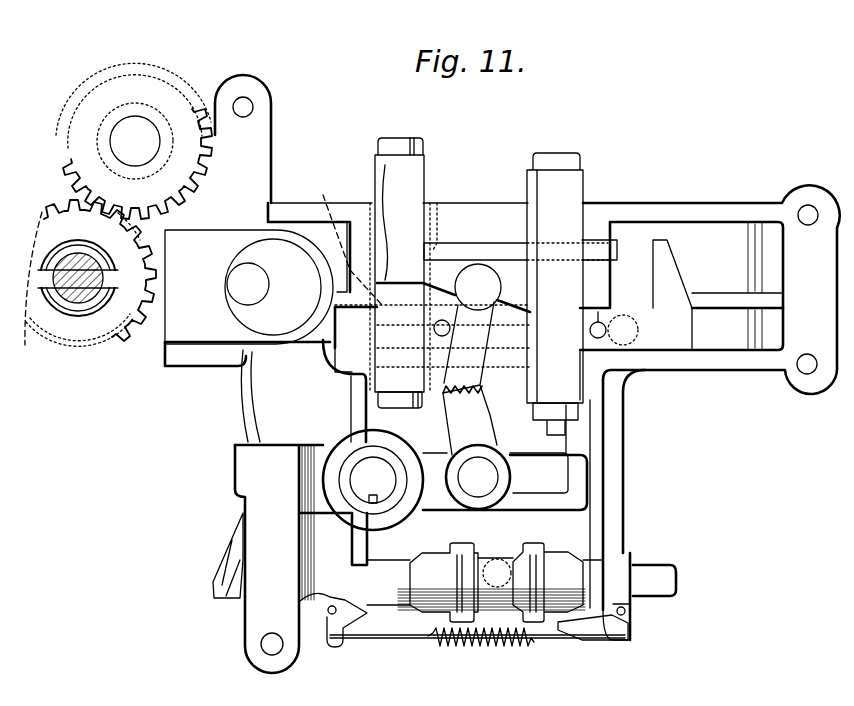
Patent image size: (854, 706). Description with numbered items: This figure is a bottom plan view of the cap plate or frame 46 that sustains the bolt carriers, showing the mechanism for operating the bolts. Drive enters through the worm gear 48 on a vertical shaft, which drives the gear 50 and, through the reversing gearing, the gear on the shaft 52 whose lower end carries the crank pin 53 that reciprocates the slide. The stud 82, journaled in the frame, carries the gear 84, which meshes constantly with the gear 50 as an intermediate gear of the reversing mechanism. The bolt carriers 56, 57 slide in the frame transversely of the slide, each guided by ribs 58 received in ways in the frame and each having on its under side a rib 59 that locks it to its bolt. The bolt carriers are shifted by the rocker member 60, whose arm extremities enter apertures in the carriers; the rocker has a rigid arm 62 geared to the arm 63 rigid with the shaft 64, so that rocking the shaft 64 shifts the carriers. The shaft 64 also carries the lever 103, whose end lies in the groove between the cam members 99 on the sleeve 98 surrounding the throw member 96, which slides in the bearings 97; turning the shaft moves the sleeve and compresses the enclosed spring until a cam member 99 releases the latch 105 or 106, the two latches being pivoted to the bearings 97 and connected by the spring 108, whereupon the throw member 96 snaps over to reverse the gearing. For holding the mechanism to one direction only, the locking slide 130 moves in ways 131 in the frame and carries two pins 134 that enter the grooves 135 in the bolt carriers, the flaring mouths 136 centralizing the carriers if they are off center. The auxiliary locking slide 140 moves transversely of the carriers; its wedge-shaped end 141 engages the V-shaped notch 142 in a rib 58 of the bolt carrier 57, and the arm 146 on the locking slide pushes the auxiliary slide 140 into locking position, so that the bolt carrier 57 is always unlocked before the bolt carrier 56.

The cap plate or frame 46 is at (760, 362).
The worm gear 48 is at (77, 300).
The gear 50 is at (133, 287).
The shaft 52 is at (277, 307).
The crank pin 53 is at (247, 297).
The bolt carrier 56 is at (583, 200).
The bolt carrier 57 is at (392, 168).
The ribs 58 is at (380, 140).
The rib 59 is at (385, 235).
The rocker member 60 is at (500, 265).
The arm 62 is at (472, 337).
The arm 63 is at (462, 418).
The shaft 64 is at (475, 485).
The stud 82 is at (130, 125).
The gear 84 is at (70, 167).
The throw member 96 is at (400, 603).
The bearings 97 is at (640, 590).
The sleeve 98 is at (503, 607).
The cam members 99 is at (560, 617).
The lever 103 is at (497, 527).
The latch 105 is at (575, 622).
The latch 106 is at (378, 607).
The spring 108 is at (497, 648).
The locking slide 130 is at (677, 338).
The ways 131 is at (602, 357).
The pins or projections 134 is at (452, 285).
The groove 135 is at (598, 322).
The flaring mouths 136 is at (355, 378).
The auxiliary locking slide 140 is at (500, 245).
The wedge-shaped end 141 is at (443, 320).
The V-shaped notch 142 is at (437, 205).
The arm 146 is at (668, 262).